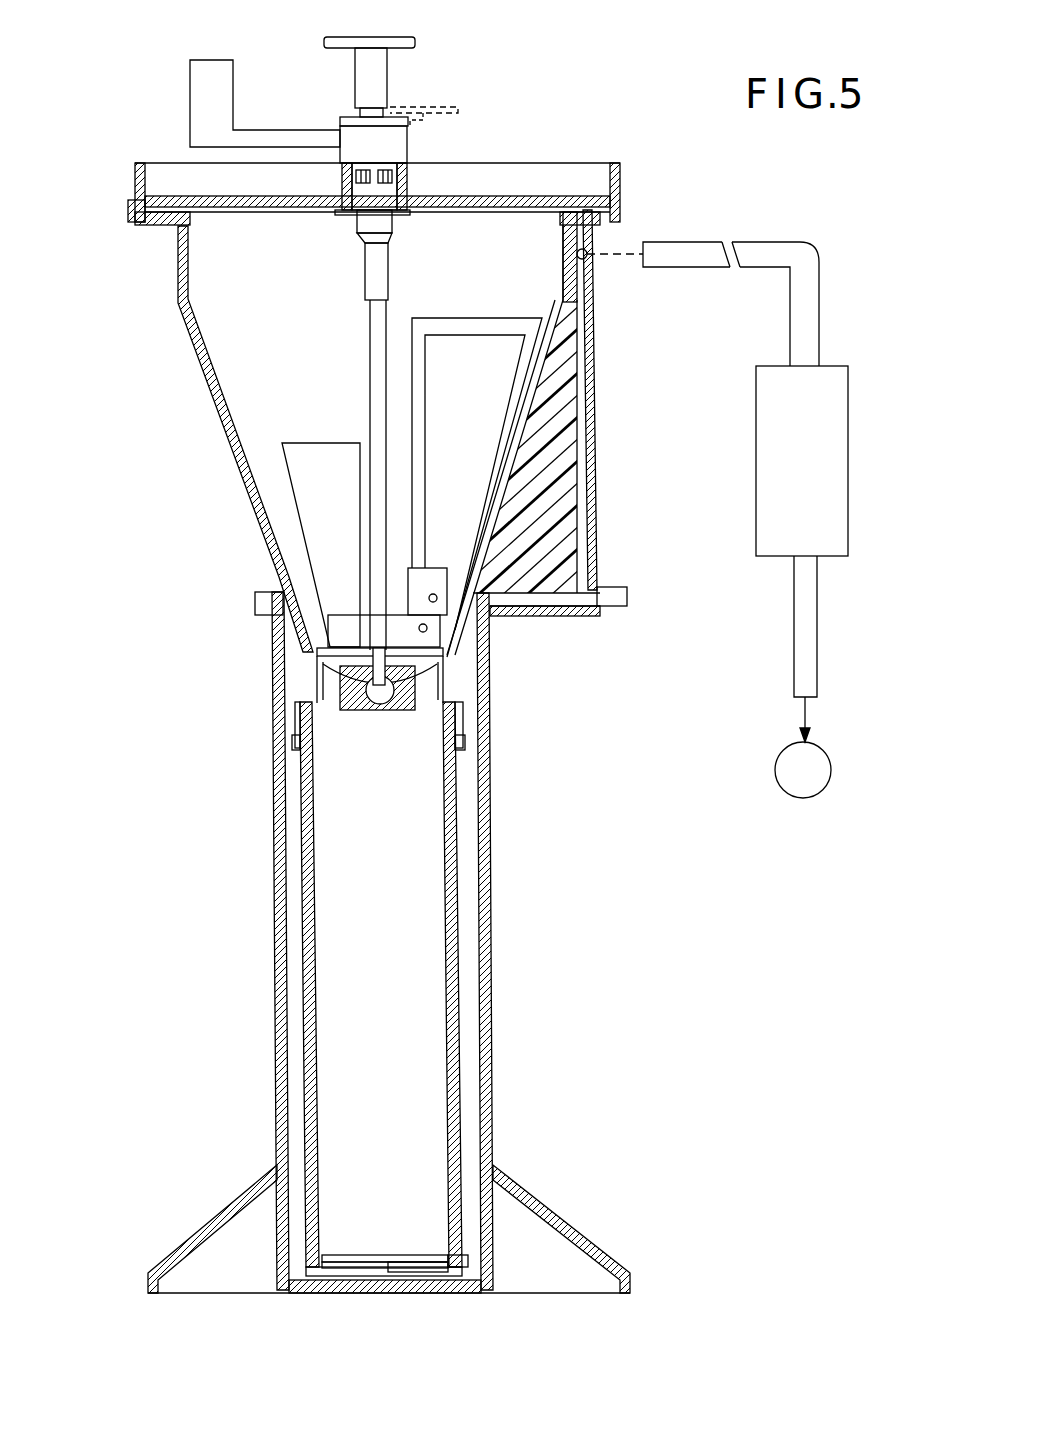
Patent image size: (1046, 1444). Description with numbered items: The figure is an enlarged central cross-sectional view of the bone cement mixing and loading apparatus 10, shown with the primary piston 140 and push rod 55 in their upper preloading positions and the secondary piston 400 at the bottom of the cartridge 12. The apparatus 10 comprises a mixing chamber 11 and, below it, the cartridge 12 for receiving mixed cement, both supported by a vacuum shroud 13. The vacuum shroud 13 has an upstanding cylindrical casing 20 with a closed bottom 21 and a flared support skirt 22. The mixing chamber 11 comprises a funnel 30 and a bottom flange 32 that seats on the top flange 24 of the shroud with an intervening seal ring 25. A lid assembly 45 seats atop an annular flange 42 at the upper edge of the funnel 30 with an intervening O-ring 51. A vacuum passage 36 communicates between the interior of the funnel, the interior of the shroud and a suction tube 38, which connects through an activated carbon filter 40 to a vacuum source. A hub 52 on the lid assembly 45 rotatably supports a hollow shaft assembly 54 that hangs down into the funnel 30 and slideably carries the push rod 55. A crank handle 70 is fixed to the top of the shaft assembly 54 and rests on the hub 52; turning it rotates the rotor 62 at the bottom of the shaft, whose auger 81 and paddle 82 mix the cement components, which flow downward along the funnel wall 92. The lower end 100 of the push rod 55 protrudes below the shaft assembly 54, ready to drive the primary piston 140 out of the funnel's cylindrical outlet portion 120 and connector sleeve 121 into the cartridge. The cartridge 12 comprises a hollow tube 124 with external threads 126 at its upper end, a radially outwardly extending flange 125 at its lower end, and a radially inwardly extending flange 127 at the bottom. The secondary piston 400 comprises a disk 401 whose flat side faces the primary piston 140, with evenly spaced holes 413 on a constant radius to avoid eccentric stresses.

The bone cement mixing and loading apparatus 10 is at (601, 78).
The mixing chamber 11 is at (165, 497).
The cartridge 12 is at (470, 830).
The vacuum shroud 13 is at (505, 978).
The cylindrical casing 20 is at (492, 880).
The closed bottom 21 is at (436, 1287).
The flared support skirt 22 is at (546, 1210).
The top flange 24 is at (616, 613).
The seal ring 25 is at (620, 610).
The funnel 30 is at (184, 333).
The bottom flange 32 is at (265, 578).
The vacuum passage 36 is at (592, 426).
The suction tube 38 is at (808, 304).
The activated carbon filter 40 is at (836, 432).
The annular flange 42 is at (160, 222).
The lid assembly 45 is at (626, 184).
The O-ring 51 is at (130, 212).
The hub 52 is at (408, 185).
The hollow shaft assembly 54 is at (362, 333).
The push rod 55 is at (432, 44).
The rotor 62 is at (345, 625).
The crank handle 70 is at (283, 130).
The auger 81 is at (478, 330).
The paddle 82 is at (331, 460).
The funnel wall 92 is at (280, 465).
The lower end of push rod 100 is at (380, 690).
The cylindrical outlet portion 120 is at (320, 672).
The connector sleeve 121 is at (300, 712).
The hollow tube 124 is at (462, 1048).
The radially outwardly extending flange 125 is at (470, 1272).
The external threads 126 is at (300, 745).
The radially inwardly extending flange 127 is at (326, 1276).
The primary piston 140 is at (340, 728).
The secondary piston 400 is at (331, 1255).
The disk 401 is at (421, 1255).
The holes 413 is at (400, 1255).